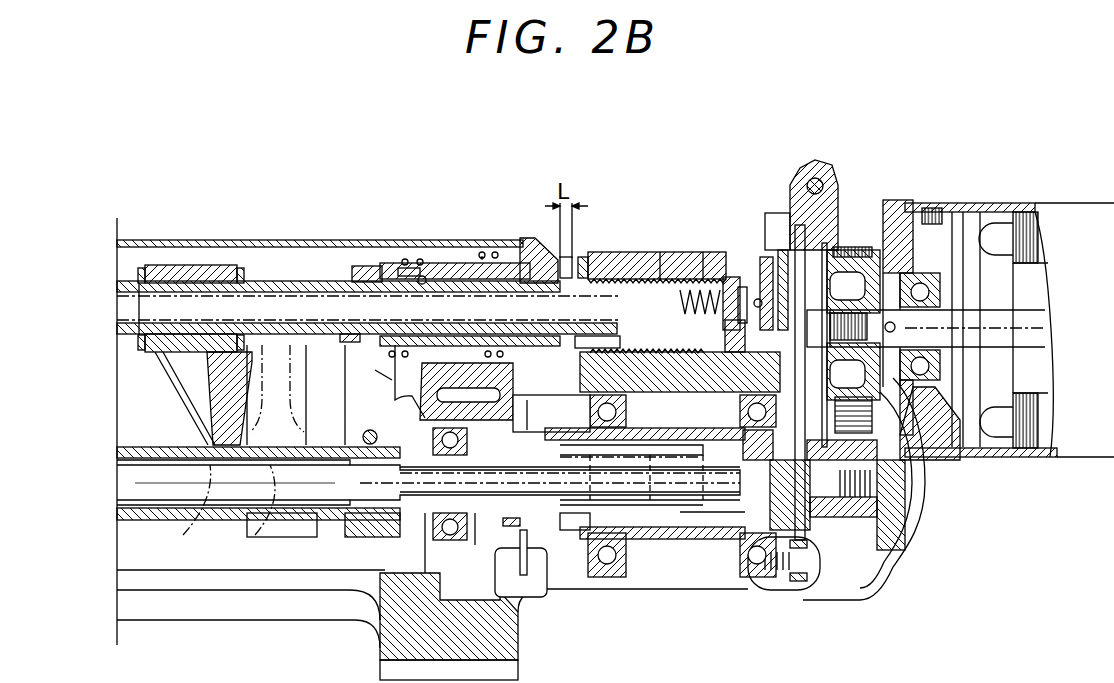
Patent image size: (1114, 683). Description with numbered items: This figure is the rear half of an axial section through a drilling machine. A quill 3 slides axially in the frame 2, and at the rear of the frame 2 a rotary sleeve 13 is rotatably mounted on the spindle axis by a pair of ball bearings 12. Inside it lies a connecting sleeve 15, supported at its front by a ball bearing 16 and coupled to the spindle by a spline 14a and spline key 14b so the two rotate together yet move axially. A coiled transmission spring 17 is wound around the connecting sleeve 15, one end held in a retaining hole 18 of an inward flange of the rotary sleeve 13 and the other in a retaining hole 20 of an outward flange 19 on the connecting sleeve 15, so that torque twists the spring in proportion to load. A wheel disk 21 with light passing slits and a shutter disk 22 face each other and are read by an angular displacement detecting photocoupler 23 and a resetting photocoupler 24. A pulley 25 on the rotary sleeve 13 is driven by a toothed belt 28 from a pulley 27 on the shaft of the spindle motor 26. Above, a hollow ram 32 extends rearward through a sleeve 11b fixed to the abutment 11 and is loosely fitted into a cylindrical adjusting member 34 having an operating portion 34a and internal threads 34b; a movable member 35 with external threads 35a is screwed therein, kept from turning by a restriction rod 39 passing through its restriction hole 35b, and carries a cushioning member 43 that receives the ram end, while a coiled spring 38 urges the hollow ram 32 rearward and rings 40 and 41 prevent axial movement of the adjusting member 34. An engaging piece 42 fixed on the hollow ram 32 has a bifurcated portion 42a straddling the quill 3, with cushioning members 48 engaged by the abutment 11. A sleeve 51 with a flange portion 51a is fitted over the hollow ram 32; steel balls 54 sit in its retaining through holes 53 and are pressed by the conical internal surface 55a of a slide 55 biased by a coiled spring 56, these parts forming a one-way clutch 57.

The frame 2 is at (202, 605).
The quill 3 is at (158, 455).
The abutment 11 is at (356, 402).
The sleeve 11b is at (357, 266).
The ball bearings 12 is at (612, 577).
The rotary sleeve 13 is at (690, 545).
The spline 14a is at (690, 512).
The spline key 14b is at (397, 532).
The connecting sleeve 15 is at (665, 542).
The ball bearing 16 is at (462, 540).
The transmission spring 17 is at (572, 548).
The retaining hole 18 is at (721, 545).
The outward flange 19 is at (421, 412).
The retaining hole 20 is at (449, 626).
The wheel disk 21 is at (532, 421).
The shutter disk 22 is at (513, 405).
The angular displacement detecting photocoupler 23 is at (500, 572).
The resetting photocoupler 24 is at (470, 548).
The pulley 25 is at (906, 508).
The spindle motor 26 is at (1092, 440).
The pulley 27 is at (882, 233).
The toothed belt 28 is at (924, 482).
The hollow ram 32 is at (270, 284).
The adjusting member 34 is at (648, 262).
The operating portion 34a is at (690, 257).
The internal threads 34b is at (740, 276).
The movable member 35 is at (745, 285).
The external threads 35a is at (728, 352).
The restriction hole 35b is at (692, 376).
The coiled spring 38 is at (318, 295).
The restriction rod 39 is at (608, 338).
The ring 40 is at (584, 257).
The ring 41 is at (745, 278).
The engaging piece 42 is at (183, 372).
The bifurcated portion 42a is at (190, 512).
The cushioning member 43 is at (690, 330).
The cushioning members 48 is at (264, 522).
The sleeve 51 is at (470, 272).
The flange portion 51a is at (552, 258).
The retaining through holes 53 is at (414, 270).
The steel ball 54 is at (422, 277).
The slide 55 is at (352, 341).
The conical internal surface 55a is at (376, 378).
The coiled spring 56 is at (482, 257).
The one-way clutch 57 is at (504, 235).